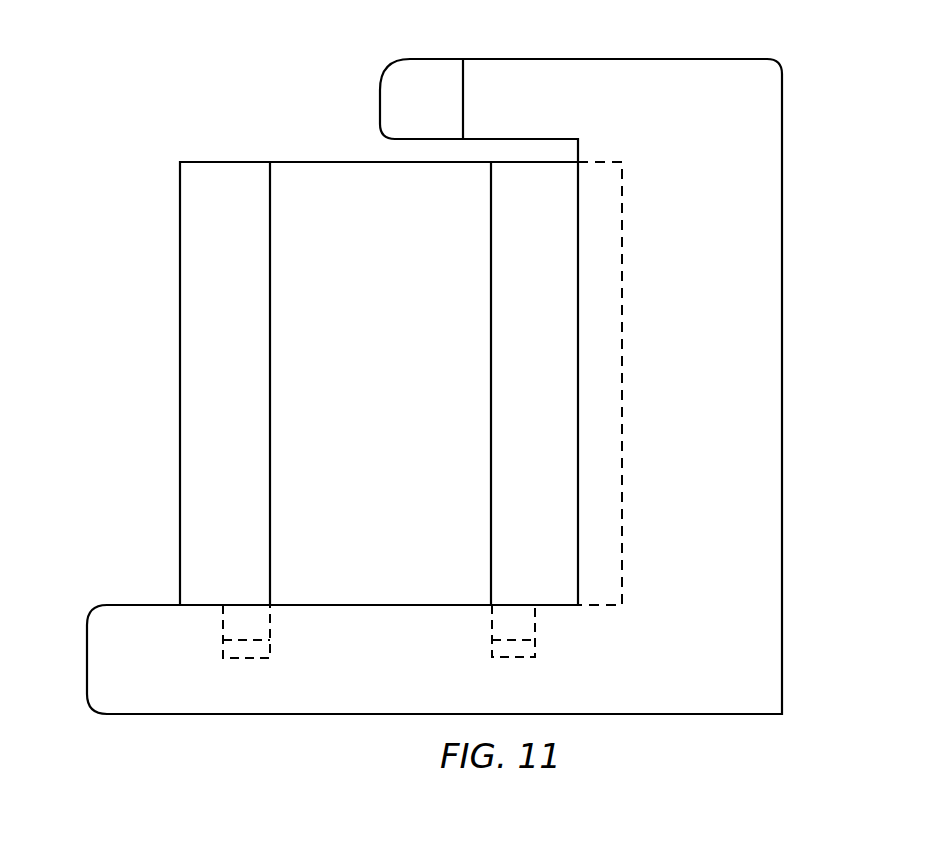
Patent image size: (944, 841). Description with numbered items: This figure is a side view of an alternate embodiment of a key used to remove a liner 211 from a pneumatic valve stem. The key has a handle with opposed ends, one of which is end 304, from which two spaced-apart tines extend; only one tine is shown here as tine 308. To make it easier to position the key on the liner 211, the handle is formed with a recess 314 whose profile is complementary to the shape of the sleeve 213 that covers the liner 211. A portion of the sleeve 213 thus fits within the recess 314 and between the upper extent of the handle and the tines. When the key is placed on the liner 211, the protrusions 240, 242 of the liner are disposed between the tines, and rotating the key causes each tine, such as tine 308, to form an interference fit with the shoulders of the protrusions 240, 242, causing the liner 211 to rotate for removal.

The liner 211 is at (223, 650).
The sleeve 213 is at (197, 204).
The protrusion 240 is at (268, 651).
The protrusion 242 is at (538, 642).
The end of handle 304 is at (782, 670).
The tine 308 is at (102, 662).
The recess 314 is at (624, 258).